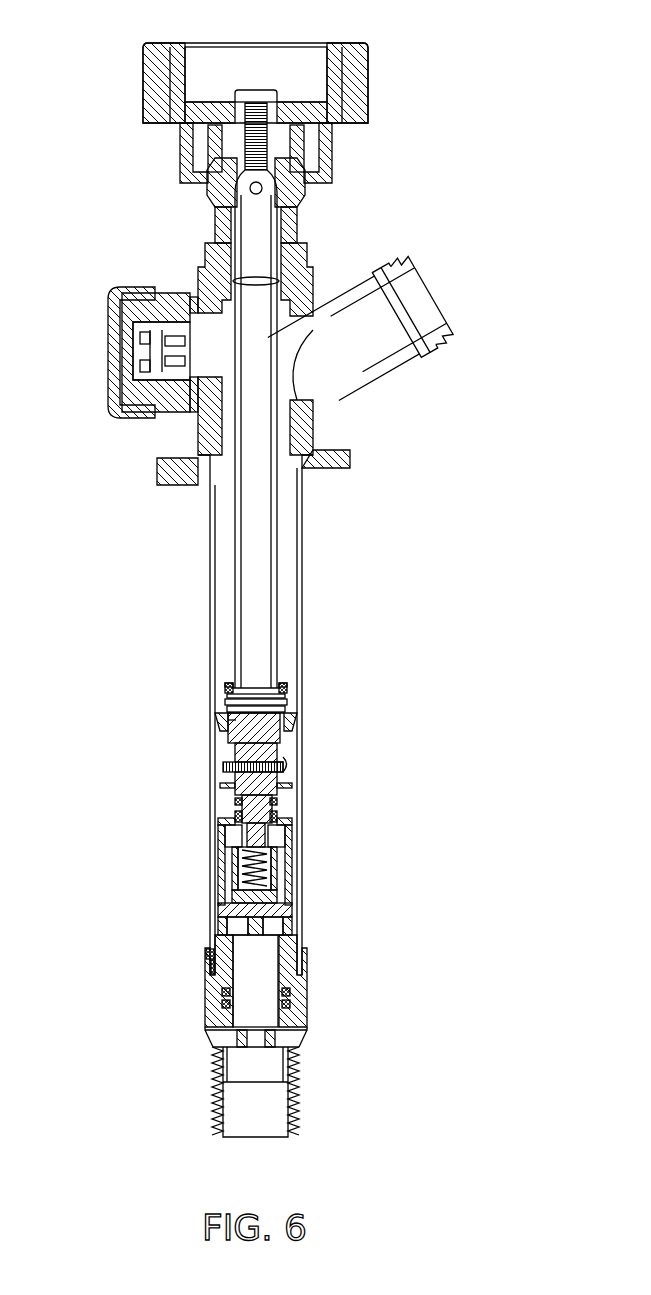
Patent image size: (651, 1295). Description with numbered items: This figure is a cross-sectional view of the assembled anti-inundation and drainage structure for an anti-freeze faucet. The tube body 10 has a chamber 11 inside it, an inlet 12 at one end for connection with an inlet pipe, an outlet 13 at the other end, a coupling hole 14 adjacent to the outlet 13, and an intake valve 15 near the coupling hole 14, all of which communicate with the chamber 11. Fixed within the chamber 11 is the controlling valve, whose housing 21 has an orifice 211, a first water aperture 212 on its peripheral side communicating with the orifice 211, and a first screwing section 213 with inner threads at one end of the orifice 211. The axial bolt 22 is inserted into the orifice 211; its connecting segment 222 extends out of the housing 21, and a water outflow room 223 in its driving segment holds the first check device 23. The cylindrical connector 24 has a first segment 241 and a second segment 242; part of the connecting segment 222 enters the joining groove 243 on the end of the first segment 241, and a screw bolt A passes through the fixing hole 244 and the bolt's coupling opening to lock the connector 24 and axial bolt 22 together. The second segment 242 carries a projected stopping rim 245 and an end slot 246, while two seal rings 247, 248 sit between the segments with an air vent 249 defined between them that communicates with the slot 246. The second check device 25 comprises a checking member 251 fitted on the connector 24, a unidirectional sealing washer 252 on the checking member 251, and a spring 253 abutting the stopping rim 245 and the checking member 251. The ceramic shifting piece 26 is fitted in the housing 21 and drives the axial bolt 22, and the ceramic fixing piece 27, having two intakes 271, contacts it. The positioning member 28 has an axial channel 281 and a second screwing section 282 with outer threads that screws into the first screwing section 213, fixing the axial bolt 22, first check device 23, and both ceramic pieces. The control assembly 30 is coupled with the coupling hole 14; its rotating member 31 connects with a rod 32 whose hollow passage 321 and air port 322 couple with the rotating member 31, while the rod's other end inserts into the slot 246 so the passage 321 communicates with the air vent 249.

The tube body 10 is at (302, 538).
The chamber 11 is at (284, 575).
The inlet 12 is at (273, 1115).
The outlet 13 is at (413, 300).
The coupling hole 14 is at (210, 288).
The intake valve 15 is at (110, 343).
The housing 21 is at (217, 846).
The orifice 211 is at (225, 830).
The first water aperture 212 is at (223, 882).
The first screwing section 213 is at (213, 948).
The axial bolt 22 is at (287, 843).
The connecting segment 222 is at (225, 737).
The water outflow room 223 is at (273, 877).
The first check device 23 is at (280, 895).
The connector 24 is at (233, 755).
The first segment 241 is at (287, 785).
The second segment 242 is at (236, 692).
The joining groove 243 is at (286, 755).
The fixing hole 244 is at (236, 776).
The stopping rim 245 is at (283, 688).
The slot 246 is at (230, 686).
The seal ring 247 is at (233, 718).
The seal ring 248 is at (236, 706).
The air vent 249 is at (233, 713).
The second check device 25 is at (339, 709).
The checking member 251 is at (285, 745).
The unidirectional sealing washer 252 is at (290, 725).
The spring 253 is at (285, 697).
The ceramic shifting piece 26 is at (217, 910).
The ceramic fixing piece 27 is at (217, 927).
The intake 271 is at (273, 927).
The positioning member 28 is at (293, 983).
The channel 281 is at (267, 958).
The second screwing section 282 is at (178, 983).
The control assembly 30 is at (343, 33).
The rotating member 31 is at (367, 98).
The rod 32 is at (236, 560).
The hollow passage 321 is at (263, 605).
The air port 322 is at (262, 190).
The screw bolt A is at (283, 764).